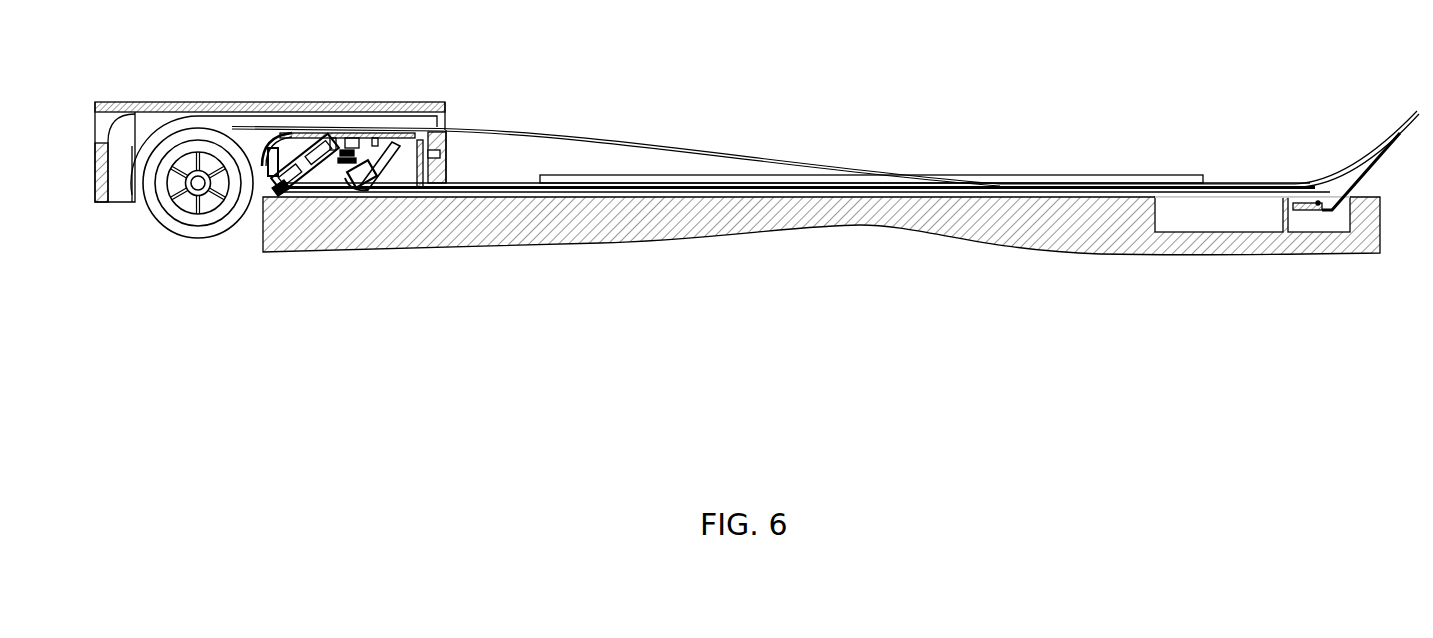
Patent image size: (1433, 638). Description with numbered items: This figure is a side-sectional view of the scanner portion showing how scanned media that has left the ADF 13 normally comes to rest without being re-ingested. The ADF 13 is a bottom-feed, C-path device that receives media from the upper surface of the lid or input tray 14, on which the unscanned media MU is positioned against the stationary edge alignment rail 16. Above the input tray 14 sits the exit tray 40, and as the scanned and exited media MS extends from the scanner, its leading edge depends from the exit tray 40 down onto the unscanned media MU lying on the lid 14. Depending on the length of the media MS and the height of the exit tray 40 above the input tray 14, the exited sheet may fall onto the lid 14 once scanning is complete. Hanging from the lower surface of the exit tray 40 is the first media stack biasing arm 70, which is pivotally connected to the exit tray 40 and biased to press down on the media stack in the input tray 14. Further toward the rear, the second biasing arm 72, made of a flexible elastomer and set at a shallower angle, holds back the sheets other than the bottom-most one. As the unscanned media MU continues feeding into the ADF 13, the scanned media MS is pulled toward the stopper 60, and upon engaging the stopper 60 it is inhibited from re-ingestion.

The ADF 13 is at (224, 100).
The lid/input tray 14 is at (1092, 235).
The stationary edge alignment rail 16 is at (1167, 178).
The exit tray 40 is at (470, 127).
The stopper 60 is at (447, 172).
The first media stack biasing arm 70 is at (395, 175).
The second biasing arm 72 is at (308, 178).
The scanned and exited media MS is at (680, 118).
The unscanned media MU is at (762, 183).